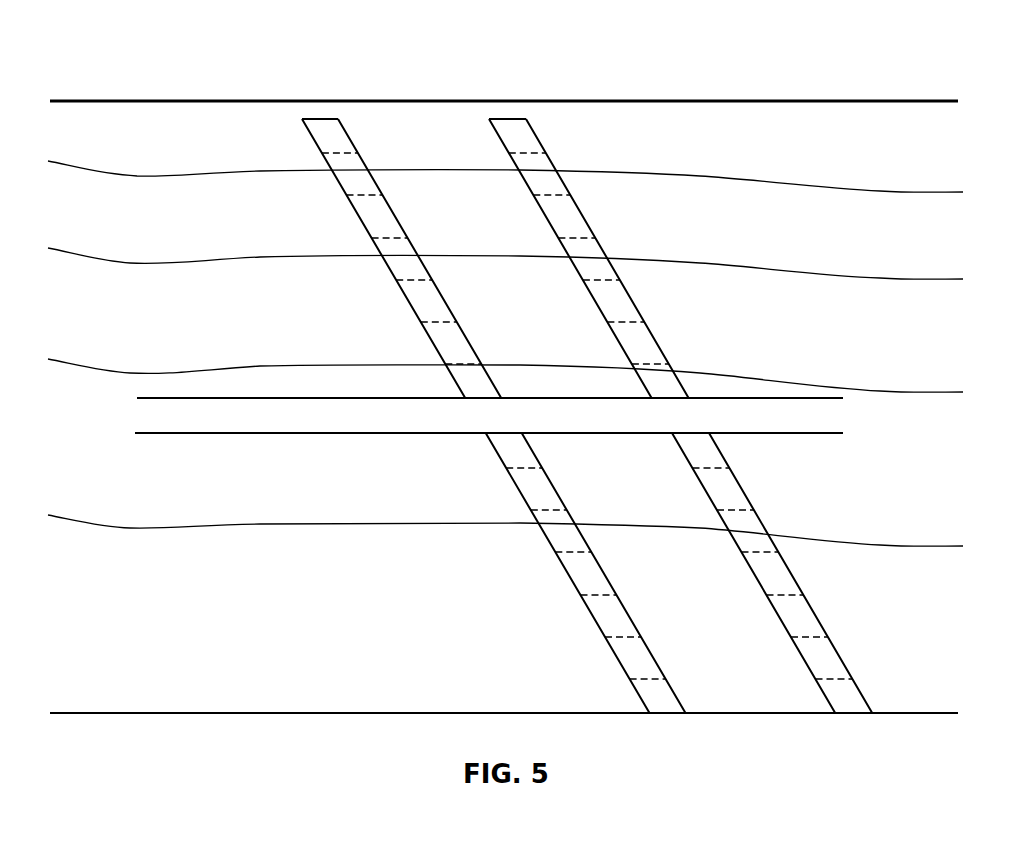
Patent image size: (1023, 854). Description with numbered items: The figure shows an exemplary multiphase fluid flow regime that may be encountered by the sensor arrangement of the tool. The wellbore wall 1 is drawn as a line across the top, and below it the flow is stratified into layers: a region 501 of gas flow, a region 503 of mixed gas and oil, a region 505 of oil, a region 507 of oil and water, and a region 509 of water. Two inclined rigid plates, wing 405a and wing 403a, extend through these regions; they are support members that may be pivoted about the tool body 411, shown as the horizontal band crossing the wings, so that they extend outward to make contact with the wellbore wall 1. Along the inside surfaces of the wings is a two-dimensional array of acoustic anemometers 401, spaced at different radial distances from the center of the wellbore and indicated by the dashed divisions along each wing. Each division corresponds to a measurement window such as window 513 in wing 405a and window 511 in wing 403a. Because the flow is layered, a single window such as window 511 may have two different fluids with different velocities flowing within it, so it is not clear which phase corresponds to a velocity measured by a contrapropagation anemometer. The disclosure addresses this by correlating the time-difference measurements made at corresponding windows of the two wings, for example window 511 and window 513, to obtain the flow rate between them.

The wellbore wall 1 is at (703, 118).
The acoustic anemometers 401 is at (722, 327).
The wing 403a is at (506, 119).
The wing 405a is at (318, 119).
The tool body 411 is at (285, 433).
The region of gas flow 501 is at (928, 176).
The region of mixed gas and oil 503 is at (928, 257).
The region of oil 505 is at (928, 351).
The region of oil and water 507 is at (928, 487).
The region of water 509 is at (928, 641).
The window 511 is at (549, 199).
The window 513 is at (357, 199).